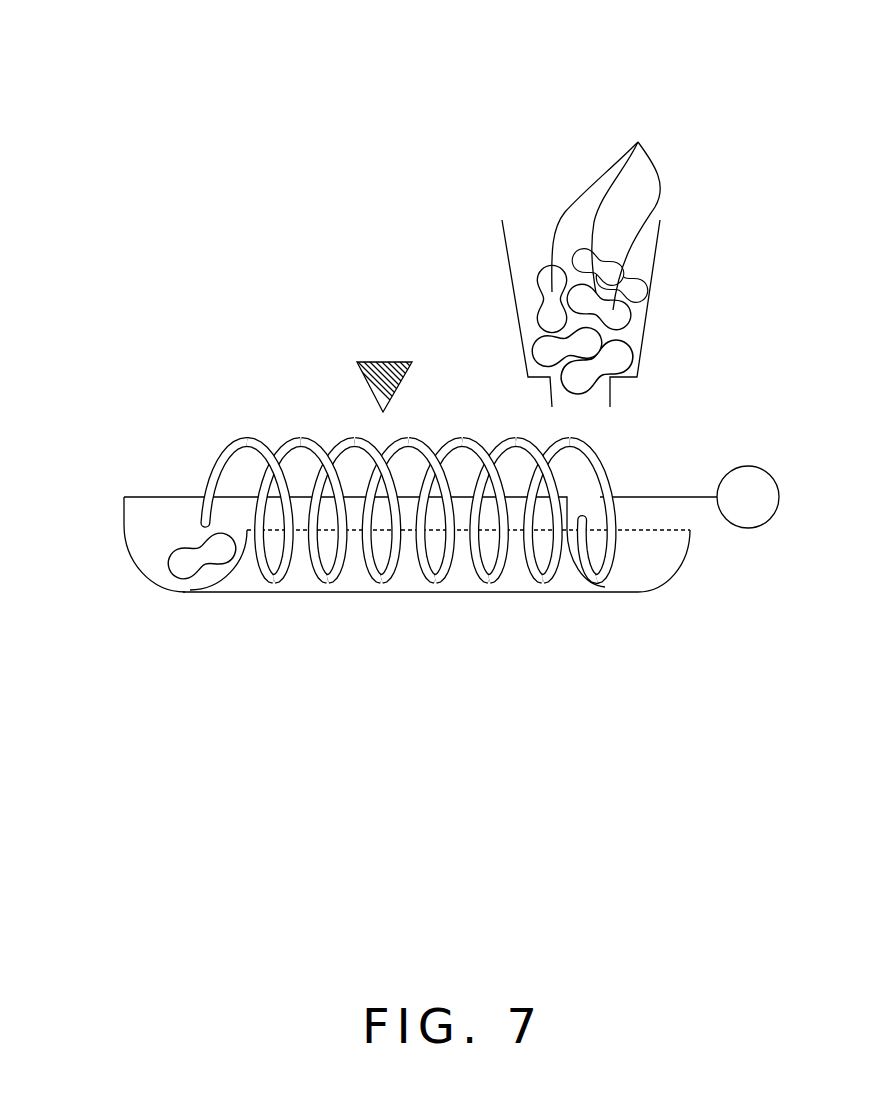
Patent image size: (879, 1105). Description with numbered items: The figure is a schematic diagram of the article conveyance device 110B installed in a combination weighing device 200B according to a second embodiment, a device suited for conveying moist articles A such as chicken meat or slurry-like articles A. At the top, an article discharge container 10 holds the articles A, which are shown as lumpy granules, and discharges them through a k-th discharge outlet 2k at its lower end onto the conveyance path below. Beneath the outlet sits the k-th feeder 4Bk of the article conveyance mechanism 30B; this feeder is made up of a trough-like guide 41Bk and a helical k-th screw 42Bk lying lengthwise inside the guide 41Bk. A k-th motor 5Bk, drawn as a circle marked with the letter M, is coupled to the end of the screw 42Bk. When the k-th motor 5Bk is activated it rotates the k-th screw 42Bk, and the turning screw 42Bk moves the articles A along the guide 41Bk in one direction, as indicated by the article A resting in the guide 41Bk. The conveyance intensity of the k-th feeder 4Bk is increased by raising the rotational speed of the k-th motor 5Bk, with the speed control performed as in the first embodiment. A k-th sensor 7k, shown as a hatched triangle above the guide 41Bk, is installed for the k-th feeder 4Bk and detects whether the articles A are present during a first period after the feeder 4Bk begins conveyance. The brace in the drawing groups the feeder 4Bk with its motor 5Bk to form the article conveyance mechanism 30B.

The combination weighing device 200B is at (110, 77).
The article conveyance device 110B is at (185, 155).
The article discharge container 10 is at (646, 301).
The k-th discharge outlet 2k is at (612, 392).
The articles A is at (606, 211).
The k-th sensor 7k is at (393, 386).
The article conveyance mechanism 30B is at (705, 723).
The k-th feeder 4Bk is at (618, 772).
The guide 41Bk is at (159, 540).
The k-th screw 42Bk is at (311, 556).
The k-th motor 5Bk is at (745, 528).